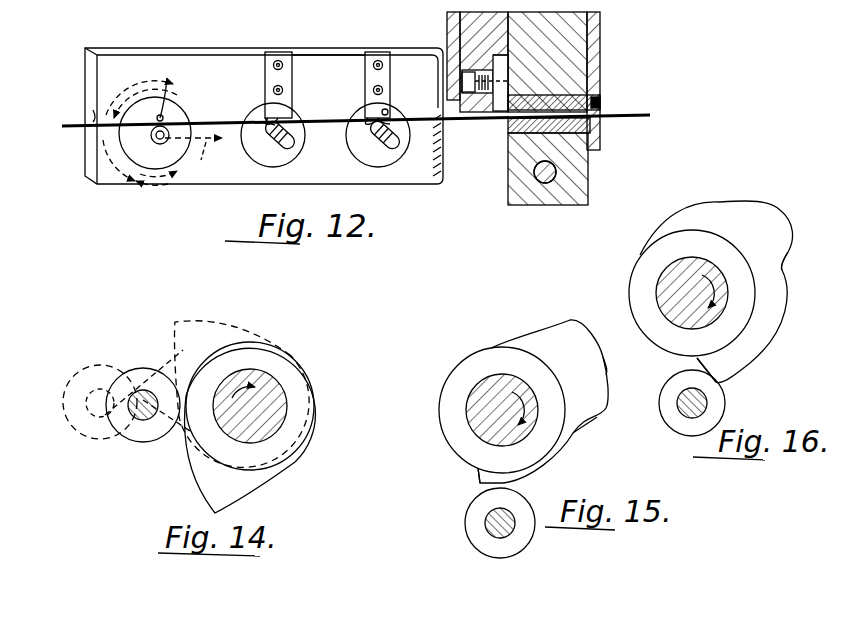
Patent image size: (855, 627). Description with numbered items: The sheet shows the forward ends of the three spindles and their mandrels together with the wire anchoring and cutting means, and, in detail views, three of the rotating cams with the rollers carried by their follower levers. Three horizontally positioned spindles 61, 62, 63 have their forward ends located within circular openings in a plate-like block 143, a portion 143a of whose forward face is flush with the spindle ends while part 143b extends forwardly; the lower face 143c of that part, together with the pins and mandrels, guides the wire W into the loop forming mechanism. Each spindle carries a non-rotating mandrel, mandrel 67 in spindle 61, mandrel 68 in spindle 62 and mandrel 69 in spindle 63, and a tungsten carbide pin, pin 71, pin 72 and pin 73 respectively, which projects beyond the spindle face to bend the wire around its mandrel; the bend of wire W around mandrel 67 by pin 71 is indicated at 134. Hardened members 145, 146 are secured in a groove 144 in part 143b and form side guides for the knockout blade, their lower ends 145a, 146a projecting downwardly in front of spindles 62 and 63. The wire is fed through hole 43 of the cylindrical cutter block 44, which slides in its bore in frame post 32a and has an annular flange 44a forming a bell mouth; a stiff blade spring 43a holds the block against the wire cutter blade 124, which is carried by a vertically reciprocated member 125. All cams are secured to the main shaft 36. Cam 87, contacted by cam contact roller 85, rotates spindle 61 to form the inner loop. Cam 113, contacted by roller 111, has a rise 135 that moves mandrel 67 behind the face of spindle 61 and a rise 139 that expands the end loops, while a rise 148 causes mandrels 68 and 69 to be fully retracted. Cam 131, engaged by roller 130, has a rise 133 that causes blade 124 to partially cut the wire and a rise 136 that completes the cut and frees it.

In FIG. 12, the plate-like block 143 is at (88, 78).
In FIG. 12, the forward face portion of block 143a is at (278, 180).
In FIG. 12, the forwardly extending part of block 143b is at (222, 68).
In FIG. 12, the lower face of block part 143c is at (93, 110).
In FIG. 12, the wire W is at (421, 120).
In FIG. 12, the spindle 61 is at (178, 113).
In FIG. 12, the mandrel 67 is at (157, 140).
In FIG. 12, the pin 71 is at (167, 91).
In FIG. 12, the wire bend 134 is at (193, 158).
In FIG. 12, the groove 144 is at (330, 58).
In FIG. 12, the hardened member 145 is at (278, 54).
In FIG. 12, the lower end of hardened member 145a is at (288, 112).
In FIG. 12, the hardened member 146 is at (380, 54).
In FIG. 12, the lower end of hardened member 146a is at (372, 110).
In FIG. 12, the spindle 62 is at (297, 133).
In FIG. 12, the mandrel 68 is at (291, 150).
In FIG. 12, the pin 72 is at (264, 117).
In FIG. 12, the spindle 63 is at (364, 151).
In FIG. 12, the mandrel 69 is at (392, 151).
In FIG. 12, the pin 73 is at (389, 113).
In FIG. 12, the member 125 is at (453, 20).
In FIG. 12, the hole 43 is at (512, 128).
In FIG. 12, the wire cutter blade 124 is at (503, 110).
In FIG. 12, the blade spring 43a is at (593, 42).
In FIG. 12, the cutter block 44 is at (567, 98).
In FIG. 12, the annular flange 44a is at (600, 108).
In FIG. 12, the frame post 32a is at (588, 186).
In FIG. 14, the cam 87 is at (220, 494).
In FIG. 14, the main shaft 36 is at (262, 415).
In FIG. 15, the main shaft 36 is at (513, 417).
In FIG. 16, the main shaft 36 is at (703, 303).
In FIG. 14, the cam contact roller 85 is at (143, 370).
In FIG. 15, the cam 113 is at (593, 368).
In FIG. 15, the rise of cam 148 is at (604, 363).
In FIG. 15, the rise of cam 139 is at (594, 425).
In FIG. 15, the rise of cam 135 is at (478, 474).
In FIG. 15, the cam contact roller 111 is at (510, 556).
In FIG. 16, the main shaft cam 131 is at (765, 236).
In FIG. 16, the rise of cam 136 is at (790, 247).
In FIG. 16, the rise of cam 133 is at (707, 371).
In FIG. 16, the cam contact roller 130 is at (705, 435).